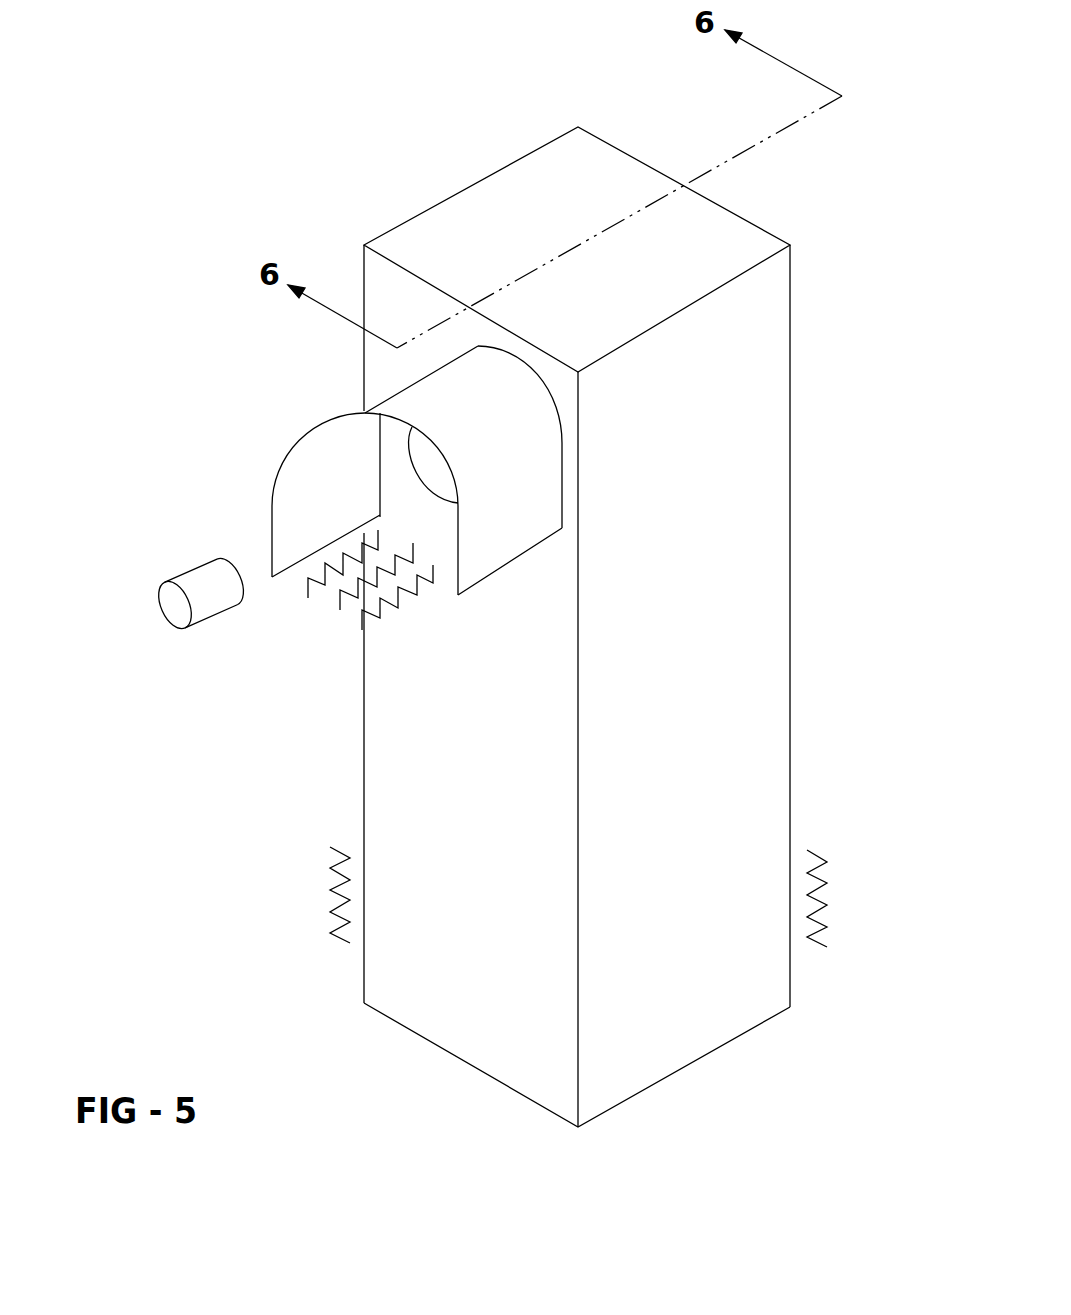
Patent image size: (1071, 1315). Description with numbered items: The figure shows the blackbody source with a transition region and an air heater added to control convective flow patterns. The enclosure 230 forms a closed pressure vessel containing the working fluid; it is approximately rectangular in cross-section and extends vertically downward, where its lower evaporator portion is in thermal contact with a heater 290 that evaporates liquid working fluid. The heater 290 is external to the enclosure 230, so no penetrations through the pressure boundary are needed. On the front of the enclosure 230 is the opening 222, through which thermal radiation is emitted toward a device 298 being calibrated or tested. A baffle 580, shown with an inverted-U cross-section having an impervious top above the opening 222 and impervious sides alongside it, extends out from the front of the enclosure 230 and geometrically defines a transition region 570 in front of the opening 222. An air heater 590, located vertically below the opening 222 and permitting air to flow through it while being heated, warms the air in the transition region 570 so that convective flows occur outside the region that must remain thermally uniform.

The enclosure 230 is at (797, 342).
The baffle 580 is at (332, 412).
The transition region 570 is at (397, 500).
The opening 222 is at (427, 457).
The air heater 590 is at (322, 590).
The device 298 is at (180, 608).
The heater 290 is at (333, 880).